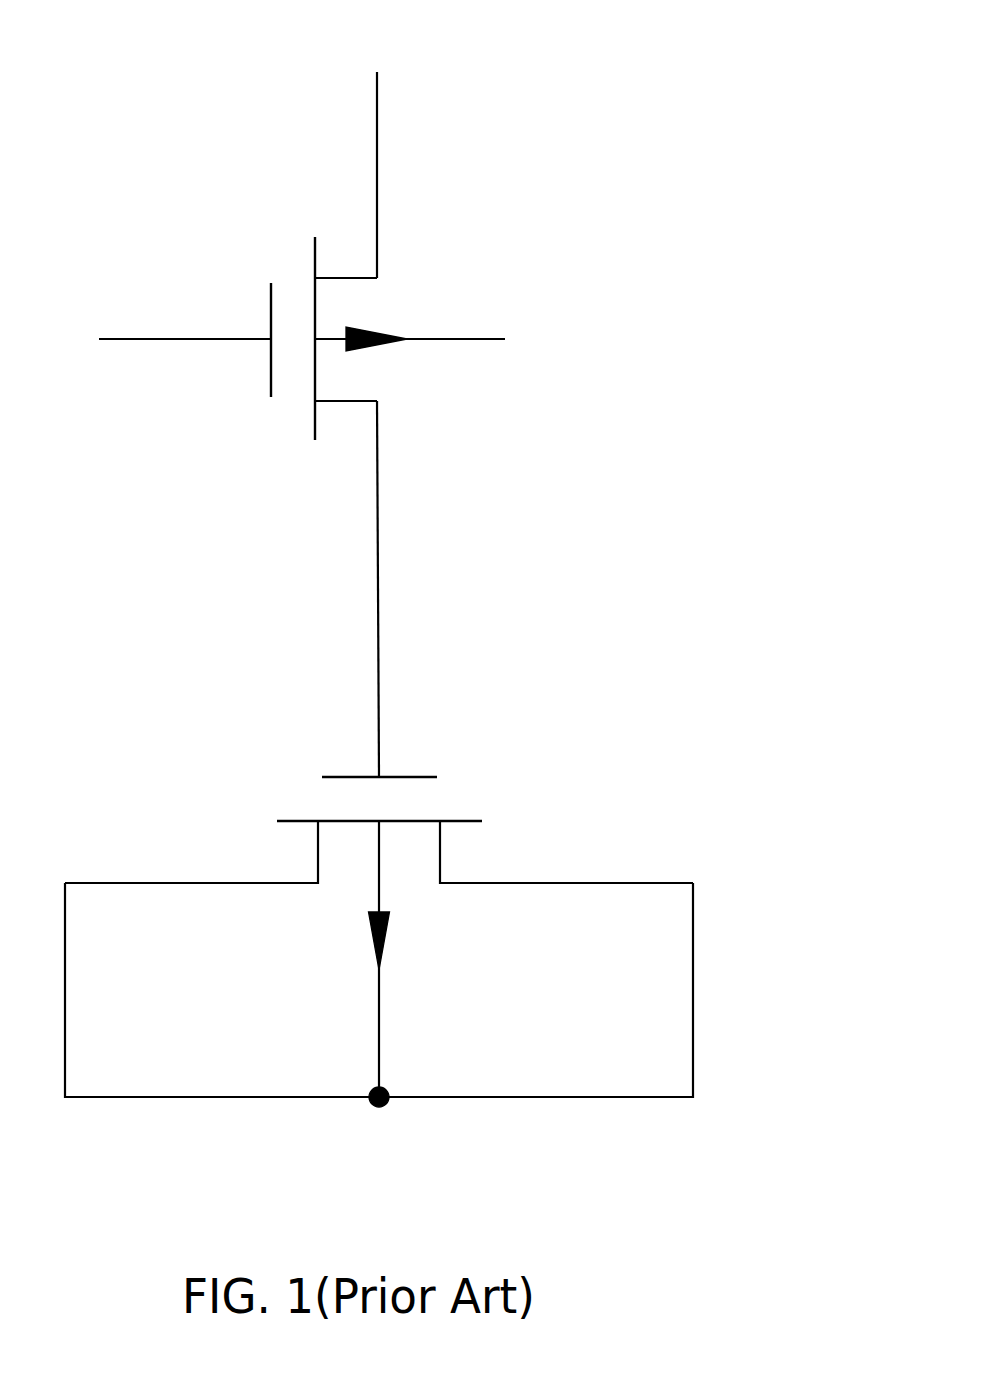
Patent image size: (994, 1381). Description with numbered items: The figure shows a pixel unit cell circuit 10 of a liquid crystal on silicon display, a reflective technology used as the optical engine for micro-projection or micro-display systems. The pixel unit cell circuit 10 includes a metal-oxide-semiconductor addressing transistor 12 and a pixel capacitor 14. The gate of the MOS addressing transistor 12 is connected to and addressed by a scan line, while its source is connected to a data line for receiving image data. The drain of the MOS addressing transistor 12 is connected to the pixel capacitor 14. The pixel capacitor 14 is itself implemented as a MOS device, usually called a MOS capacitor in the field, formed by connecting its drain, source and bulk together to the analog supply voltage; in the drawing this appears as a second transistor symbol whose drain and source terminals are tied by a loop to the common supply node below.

The pixel unit cell circuit 10 is at (745, 90).
The MOS addressing transistor 12 is at (290, 292).
The pixel capacitor 14 is at (437, 798).